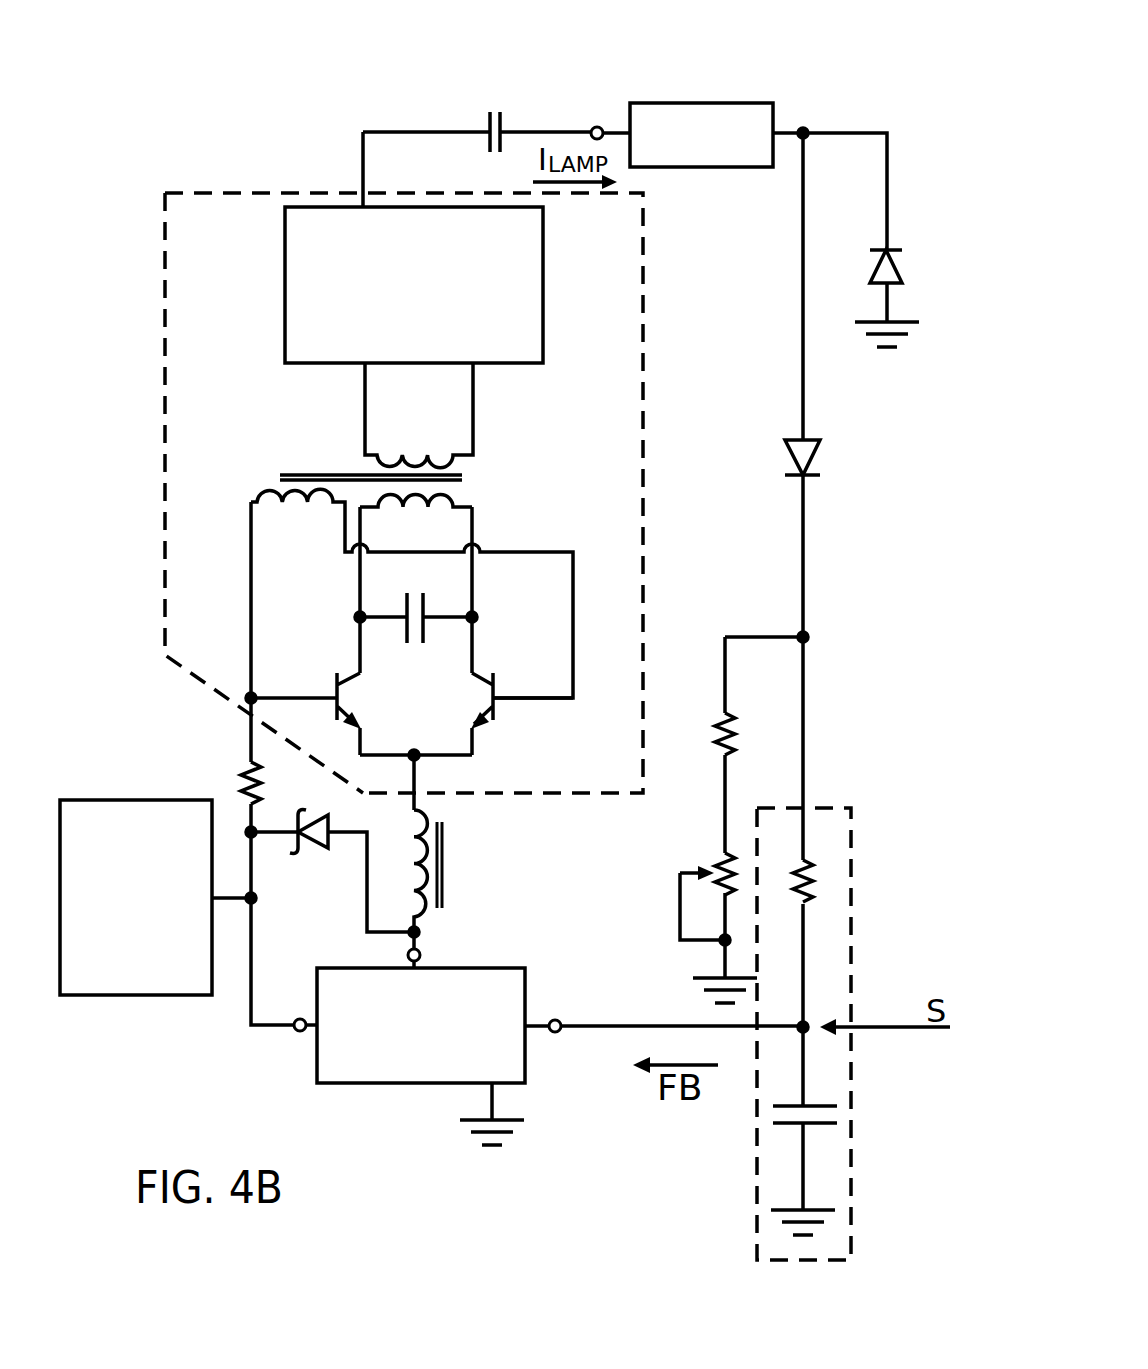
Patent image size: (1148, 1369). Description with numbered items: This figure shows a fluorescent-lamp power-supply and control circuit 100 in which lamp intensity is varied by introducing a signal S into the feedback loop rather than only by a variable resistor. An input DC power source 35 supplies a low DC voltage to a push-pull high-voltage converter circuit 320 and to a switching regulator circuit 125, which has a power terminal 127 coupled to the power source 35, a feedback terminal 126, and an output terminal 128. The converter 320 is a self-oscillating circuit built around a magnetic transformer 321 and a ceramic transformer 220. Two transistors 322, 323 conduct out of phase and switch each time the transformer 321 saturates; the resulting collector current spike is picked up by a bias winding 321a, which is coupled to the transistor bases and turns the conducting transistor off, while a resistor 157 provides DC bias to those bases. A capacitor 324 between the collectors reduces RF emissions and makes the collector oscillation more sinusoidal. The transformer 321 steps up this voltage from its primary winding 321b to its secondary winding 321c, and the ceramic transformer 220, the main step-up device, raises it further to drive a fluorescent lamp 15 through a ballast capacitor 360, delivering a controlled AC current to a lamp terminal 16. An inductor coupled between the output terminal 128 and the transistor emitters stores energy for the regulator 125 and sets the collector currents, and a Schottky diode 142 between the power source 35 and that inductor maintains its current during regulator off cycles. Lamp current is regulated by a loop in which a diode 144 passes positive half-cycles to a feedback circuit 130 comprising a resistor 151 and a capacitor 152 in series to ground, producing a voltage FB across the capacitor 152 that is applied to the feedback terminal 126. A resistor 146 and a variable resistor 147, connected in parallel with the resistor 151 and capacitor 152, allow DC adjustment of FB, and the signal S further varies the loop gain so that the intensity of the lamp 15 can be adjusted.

The fluorescent-lamp power-supply and control circuit 100 is at (316, 77).
The ballast capacitor 360 is at (490, 110).
The terminal 16 is at (599, 126).
The fluorescent lamp 15 is at (703, 103).
The push-pull high-voltage converter circuit 320 is at (287, 190).
The ceramic transformer 220 is at (543, 307).
The magnetic transformer 321 is at (377, 530).
The bias winding 321a is at (270, 492).
The primary winding 321b is at (440, 504).
The secondary winding 321c is at (453, 458).
The capacitor 324 is at (426, 596).
The transistor 322 is at (340, 703).
The transistor 323 is at (490, 696).
The resistor 157 is at (245, 766).
The input DC power source 35 is at (177, 800).
The Schottky diode 142 is at (312, 848).
The output terminal 128 is at (421, 954).
The switching regulator circuit 125 is at (533, 950).
The power terminal 127 is at (296, 1034).
The feedback terminal 126 is at (556, 1033).
The diode 144 is at (808, 461).
The resistor 146 is at (720, 712).
The variable resistor 147 is at (695, 873).
The feedback circuit 130 is at (808, 806).
The resistor 151 is at (822, 895).
The capacitor 152 is at (775, 1114).